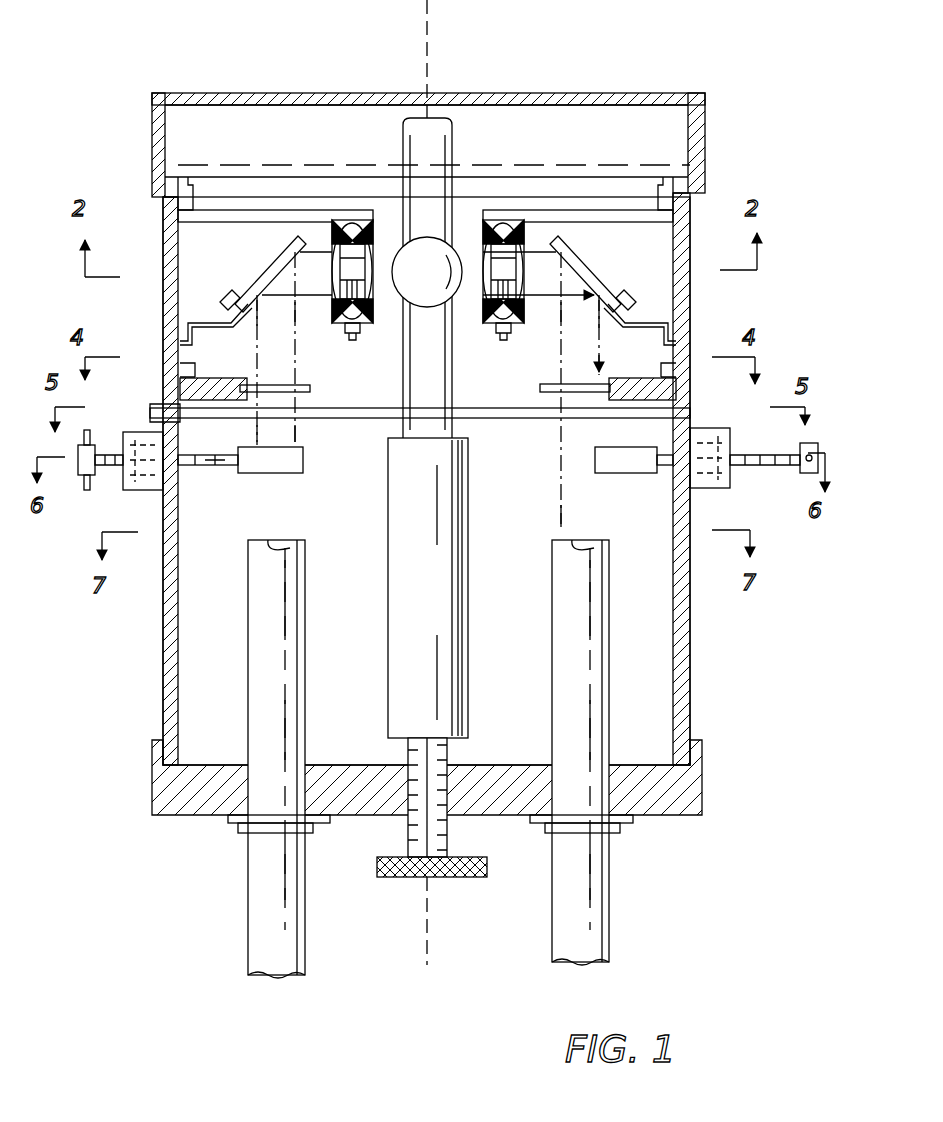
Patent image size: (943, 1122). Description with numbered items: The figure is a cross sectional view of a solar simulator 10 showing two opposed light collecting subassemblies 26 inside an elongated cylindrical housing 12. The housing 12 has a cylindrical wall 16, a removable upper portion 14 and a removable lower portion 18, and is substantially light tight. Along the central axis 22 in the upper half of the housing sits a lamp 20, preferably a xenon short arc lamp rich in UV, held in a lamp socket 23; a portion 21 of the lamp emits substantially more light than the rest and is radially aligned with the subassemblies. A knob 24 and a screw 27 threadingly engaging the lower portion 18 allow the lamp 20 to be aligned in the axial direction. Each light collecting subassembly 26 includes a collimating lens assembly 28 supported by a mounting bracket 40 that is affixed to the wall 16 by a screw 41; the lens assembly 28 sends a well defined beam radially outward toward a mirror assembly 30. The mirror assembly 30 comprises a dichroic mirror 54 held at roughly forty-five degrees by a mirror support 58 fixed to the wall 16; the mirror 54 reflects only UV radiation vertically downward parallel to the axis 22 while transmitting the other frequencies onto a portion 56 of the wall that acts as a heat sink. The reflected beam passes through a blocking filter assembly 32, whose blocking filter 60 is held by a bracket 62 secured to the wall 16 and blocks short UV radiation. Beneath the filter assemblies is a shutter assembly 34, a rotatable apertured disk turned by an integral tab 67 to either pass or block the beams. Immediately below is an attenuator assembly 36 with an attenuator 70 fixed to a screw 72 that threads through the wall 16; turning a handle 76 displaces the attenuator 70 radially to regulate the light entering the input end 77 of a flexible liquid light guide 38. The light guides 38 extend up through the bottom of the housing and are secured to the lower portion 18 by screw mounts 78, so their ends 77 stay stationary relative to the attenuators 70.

The solar simulator 10 is at (730, 678).
The housing 12 is at (650, 718).
The upper portion 14 is at (580, 95).
The cylindrical wall 16 is at (690, 627).
The lower portion 18 is at (675, 815).
The lamp 20 is at (455, 163).
The portion of lamp 21 is at (427, 272).
The central axis 22 is at (432, 47).
The lamp socket 23 is at (428, 588).
The knob 24 is at (470, 877).
The light collecting subassembly 26 is at (245, 348).
The screw 27 is at (410, 835).
The collimating lens assembly 28 is at (370, 300).
The mirror assembly 30 is at (262, 252).
The blocking filter assembly 32 is at (300, 390).
The shutter assembly 34 is at (318, 418).
The attenuator assembly 36 is at (303, 468).
The flexible liquid light guide 38 is at (428, 759).
The mounting bracket 40 is at (272, 214).
The screw 41 is at (205, 195).
The dichroic mirror 54 is at (245, 272).
The heat sink portion of wall 56 is at (165, 237).
The mirror support 58 is at (228, 304).
The blocking filter 60 is at (270, 385).
The bracket 62 is at (185, 373).
The tab 67 is at (165, 412).
The attenuator 70 is at (447, 461).
The screw 72 is at (130, 478).
The handle 76 is at (90, 490).
The input end of light guide 77 is at (290, 555).
The screw mount 78 is at (240, 833).